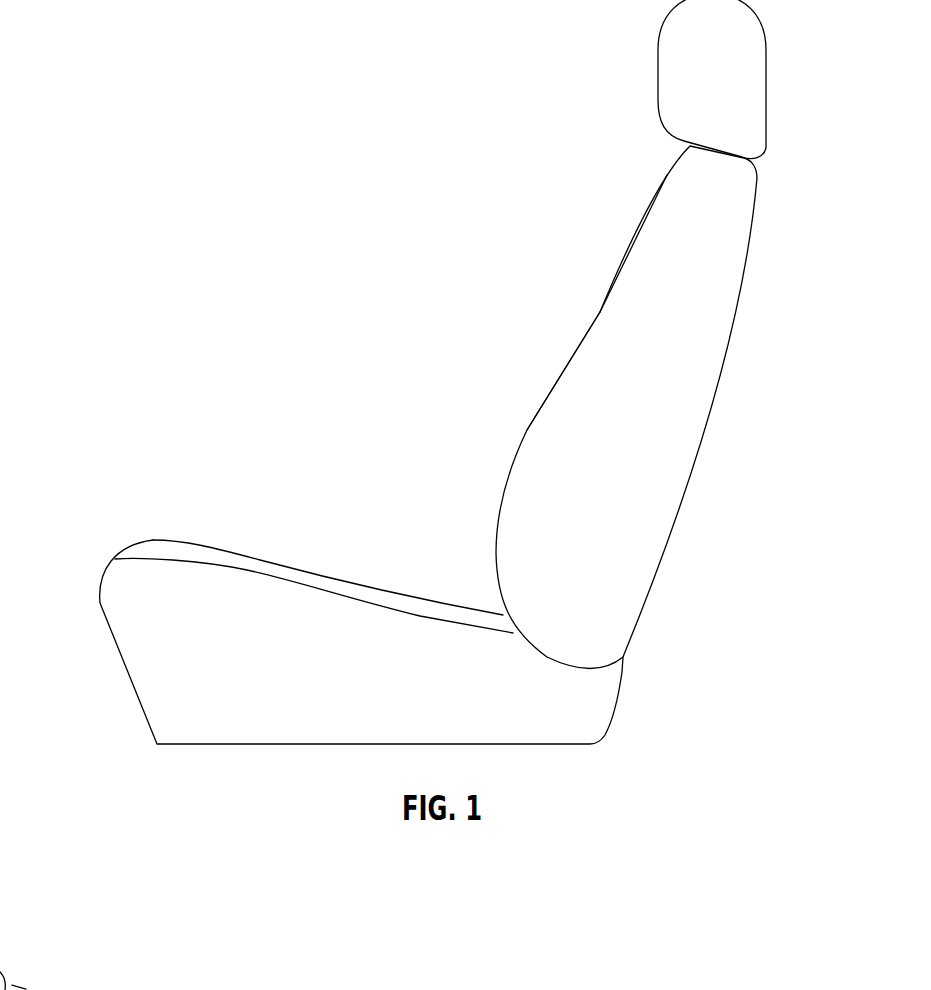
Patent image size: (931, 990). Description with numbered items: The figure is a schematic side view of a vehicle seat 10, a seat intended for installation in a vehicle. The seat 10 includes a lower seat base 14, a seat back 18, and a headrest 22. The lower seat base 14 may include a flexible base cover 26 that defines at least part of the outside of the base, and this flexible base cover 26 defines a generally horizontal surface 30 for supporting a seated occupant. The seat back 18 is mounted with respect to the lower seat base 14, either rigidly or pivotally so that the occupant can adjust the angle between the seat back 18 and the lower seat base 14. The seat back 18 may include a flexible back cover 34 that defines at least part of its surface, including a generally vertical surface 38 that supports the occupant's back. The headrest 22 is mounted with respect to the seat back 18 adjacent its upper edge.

The vehicle seat 10 is at (436, 372).
The lower seat base 14 is at (331, 610).
The seat back 18 is at (728, 347).
The headrest 22 is at (767, 62).
The flexible base cover 26 is at (220, 545).
The generally horizontal surface 30 is at (315, 571).
The flexible back cover 34 is at (528, 430).
The generally vertical surface 38 is at (596, 312).